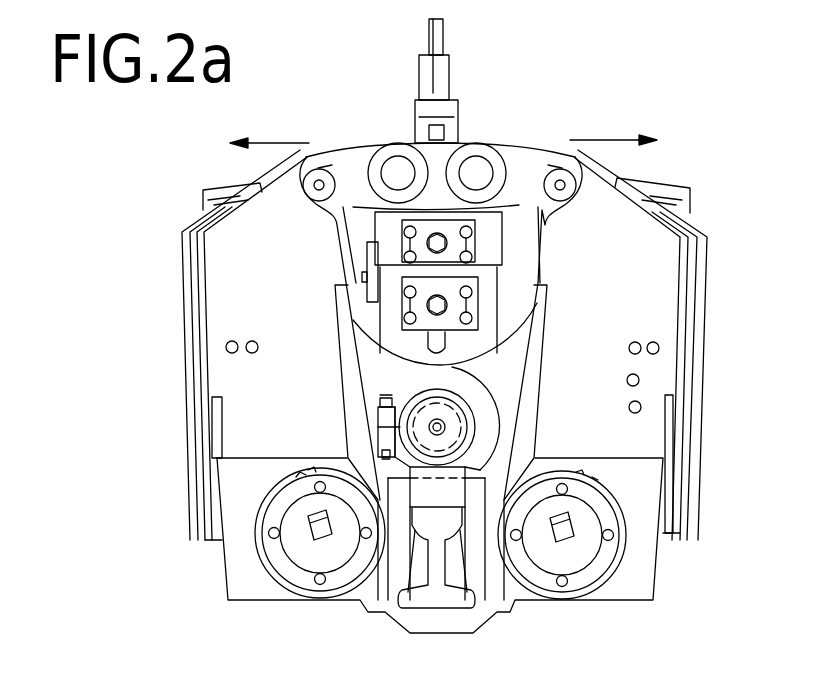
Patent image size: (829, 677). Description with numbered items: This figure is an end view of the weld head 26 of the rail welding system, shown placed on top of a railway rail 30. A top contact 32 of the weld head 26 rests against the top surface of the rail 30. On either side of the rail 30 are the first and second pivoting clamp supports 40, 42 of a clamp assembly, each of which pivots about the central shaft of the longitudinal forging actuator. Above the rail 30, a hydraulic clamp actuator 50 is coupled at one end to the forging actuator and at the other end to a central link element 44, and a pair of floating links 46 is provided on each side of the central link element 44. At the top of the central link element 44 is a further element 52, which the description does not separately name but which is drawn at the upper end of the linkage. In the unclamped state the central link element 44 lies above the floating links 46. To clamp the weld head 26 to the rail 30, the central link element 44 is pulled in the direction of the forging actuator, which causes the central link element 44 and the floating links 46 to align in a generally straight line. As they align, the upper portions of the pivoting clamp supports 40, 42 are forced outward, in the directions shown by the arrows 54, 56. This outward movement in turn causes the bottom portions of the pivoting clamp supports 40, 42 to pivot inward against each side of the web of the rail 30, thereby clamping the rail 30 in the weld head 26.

The weld head 26 is at (158, 513).
The railway rail 30 is at (453, 605).
The top contact 32 is at (447, 493).
The first pivoting clamp support 40 is at (202, 268).
The second pivoting clamp support 42 is at (702, 293).
The central link element 44 is at (439, 165).
The floating links 46 is at (361, 167).
The hydraulic clamp actuator 50 is at (493, 243).
The lifting pin 52 is at (431, 135).
The arrow 54 is at (584, 140).
The arrow 56 is at (278, 143).